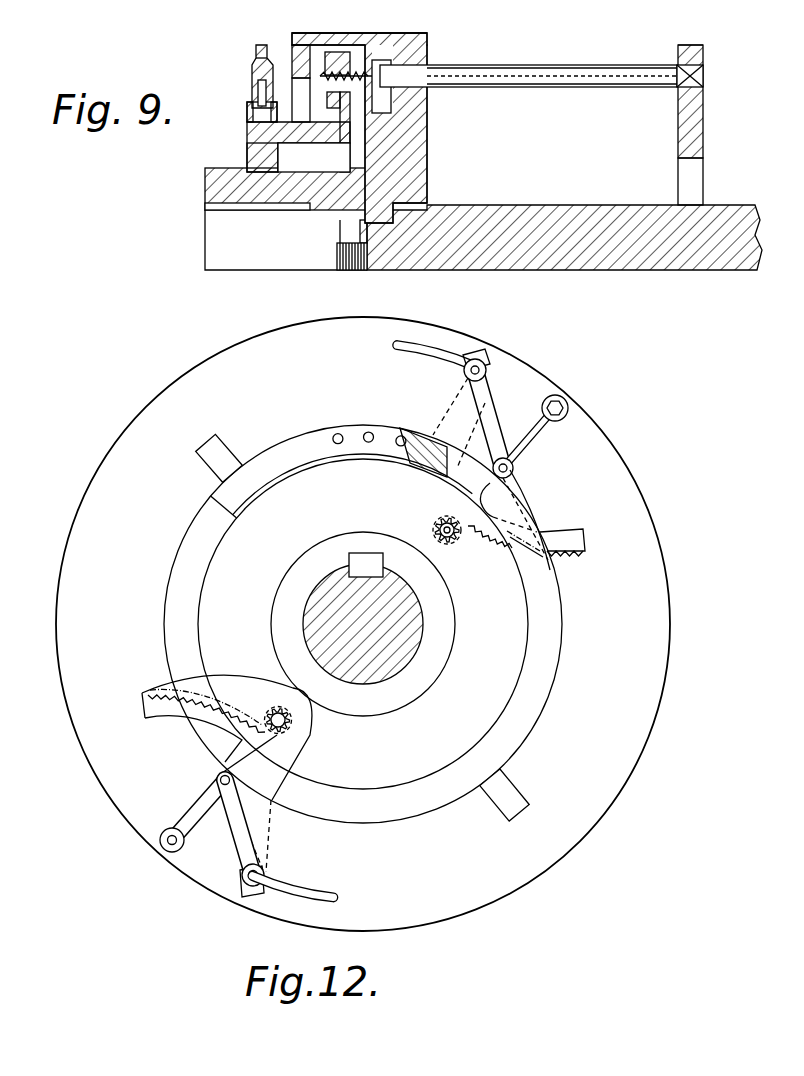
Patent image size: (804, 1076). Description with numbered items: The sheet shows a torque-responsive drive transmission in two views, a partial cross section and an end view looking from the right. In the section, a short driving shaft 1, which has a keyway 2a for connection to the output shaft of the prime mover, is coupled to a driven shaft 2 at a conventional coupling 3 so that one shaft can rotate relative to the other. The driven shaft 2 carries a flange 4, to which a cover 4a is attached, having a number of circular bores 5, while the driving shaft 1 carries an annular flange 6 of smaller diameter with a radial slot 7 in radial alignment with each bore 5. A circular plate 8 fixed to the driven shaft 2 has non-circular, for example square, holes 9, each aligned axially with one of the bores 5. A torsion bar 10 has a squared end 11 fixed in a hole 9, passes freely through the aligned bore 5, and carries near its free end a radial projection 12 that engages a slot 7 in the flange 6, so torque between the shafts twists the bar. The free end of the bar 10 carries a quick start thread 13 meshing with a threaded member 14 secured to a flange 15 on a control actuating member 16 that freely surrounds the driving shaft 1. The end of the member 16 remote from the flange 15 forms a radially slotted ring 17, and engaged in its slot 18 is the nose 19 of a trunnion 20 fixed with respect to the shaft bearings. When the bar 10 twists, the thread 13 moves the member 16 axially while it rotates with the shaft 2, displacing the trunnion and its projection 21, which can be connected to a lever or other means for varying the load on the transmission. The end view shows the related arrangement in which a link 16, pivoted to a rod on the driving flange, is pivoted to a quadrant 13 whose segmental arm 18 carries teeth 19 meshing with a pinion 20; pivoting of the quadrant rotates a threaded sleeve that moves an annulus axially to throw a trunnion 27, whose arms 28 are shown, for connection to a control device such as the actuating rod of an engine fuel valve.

In FIG. 9, the driving shaft 1 is at (212, 180).
In FIG. 9, the driven shaft 2 is at (563, 228).
In FIG. 12, the driven shaft 2 is at (403, 645).
In FIG. 9, the keyway 2a is at (282, 210).
In FIG. 9, the coupling 3 is at (338, 236).
In FIG. 9, the flange 4 is at (430, 62).
In FIG. 9, the cover 4a is at (294, 33).
In FIG. 9, the circular bore 5 is at (392, 85).
In FIG. 9, the annular flange 6 is at (383, 157).
In FIG. 9, the radial slot 7 is at (383, 115).
In FIG. 9, the circular plate 8 is at (690, 125).
In FIG. 9, the hole 9 is at (696, 58).
In FIG. 9, the torsion bar 10 is at (563, 70).
In FIG. 9, the squared end 11 is at (704, 76).
In FIG. 9, the radial projection 12 is at (412, 50).
In FIG. 9, the quick start thread 13 is at (350, 72).
In FIG. 12, the quick start thread 13 is at (190, 805).
In FIG. 9, the threaded member 14 is at (330, 50).
In FIG. 9, the flange 15 is at (340, 104).
In FIG. 9, the control actuating member 16 is at (252, 133).
In FIG. 12, the control actuating member 16 is at (238, 850).
In FIG. 9, the radially slotted ring 17 is at (250, 112).
In FIG. 9, the slot 18 is at (278, 155).
In FIG. 12, the slot 18 is at (153, 697).
In FIG. 9, the nose 19 is at (258, 98).
In FIG. 12, the nose 19 is at (196, 700).
In FIG. 9, the trunnion 20 is at (252, 72).
In FIG. 12, the trunnion 20 is at (293, 722).
In FIG. 9, the projection 21 is at (256, 52).
In FIG. 12, the trunnion 27 is at (523, 707).
In FIG. 12, the arms 28 is at (510, 803).